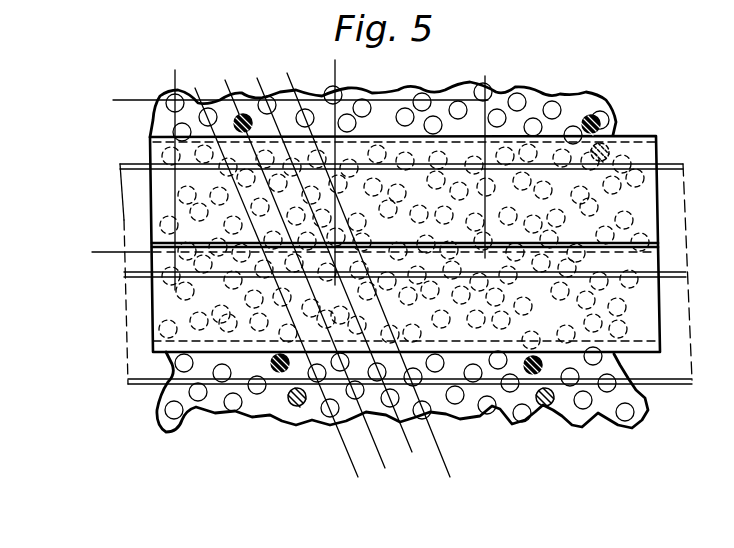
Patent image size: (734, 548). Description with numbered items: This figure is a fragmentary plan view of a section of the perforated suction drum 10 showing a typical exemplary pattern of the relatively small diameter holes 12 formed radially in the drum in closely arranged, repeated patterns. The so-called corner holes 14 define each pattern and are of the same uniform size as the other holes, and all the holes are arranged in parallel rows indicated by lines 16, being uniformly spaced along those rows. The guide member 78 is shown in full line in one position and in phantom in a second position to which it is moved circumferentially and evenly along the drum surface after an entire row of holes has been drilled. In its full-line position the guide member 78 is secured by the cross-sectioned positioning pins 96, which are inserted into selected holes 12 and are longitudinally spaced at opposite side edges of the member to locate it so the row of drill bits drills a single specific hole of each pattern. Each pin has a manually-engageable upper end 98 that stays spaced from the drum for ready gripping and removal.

The suction drum 10 is at (158, 118).
The holes 12 is at (446, 92).
The corner holes 14 is at (160, 98).
The lines 16 is at (199, 36).
The guide member 78 is at (648, 145).
The positioning pins 96 is at (243, 113).
The manually-engageable upper end 98 is at (328, 540).